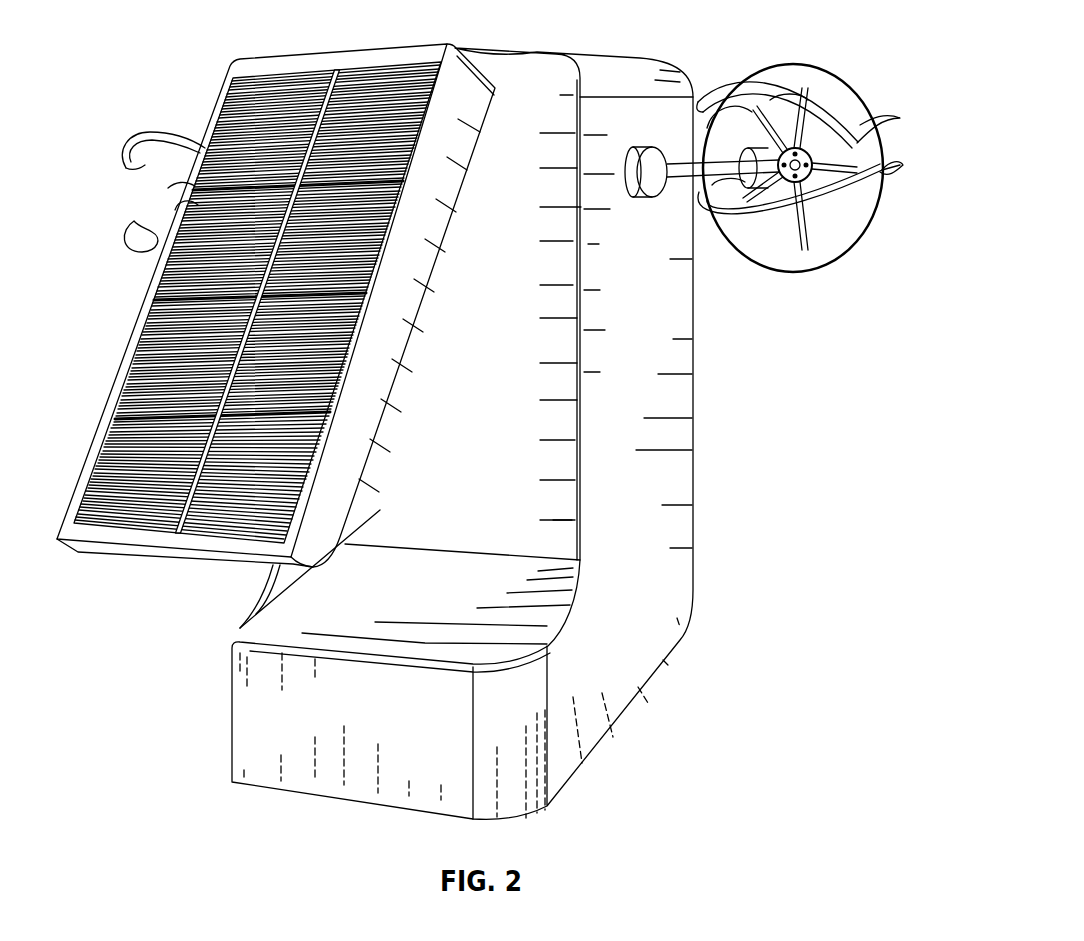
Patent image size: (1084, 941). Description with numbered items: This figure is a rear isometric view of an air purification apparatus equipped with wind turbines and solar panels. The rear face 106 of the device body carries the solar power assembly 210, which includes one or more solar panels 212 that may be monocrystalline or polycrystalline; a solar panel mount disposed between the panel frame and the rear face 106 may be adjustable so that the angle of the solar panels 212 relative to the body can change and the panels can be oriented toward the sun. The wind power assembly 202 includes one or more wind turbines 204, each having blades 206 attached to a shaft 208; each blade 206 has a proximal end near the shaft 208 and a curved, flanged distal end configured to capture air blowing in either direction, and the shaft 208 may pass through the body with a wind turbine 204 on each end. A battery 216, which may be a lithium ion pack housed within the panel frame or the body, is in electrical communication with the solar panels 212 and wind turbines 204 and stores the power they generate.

The rear face 106 is at (259, 607).
The wind power assembly 202 is at (896, 272).
The wind turbine 204 is at (190, 126).
The blade 206 is at (876, 121).
The shaft 208 is at (693, 157).
The solar power assembly 210 is at (111, 557).
The solar panel 212 is at (178, 348).
The battery 216 is at (380, 510).